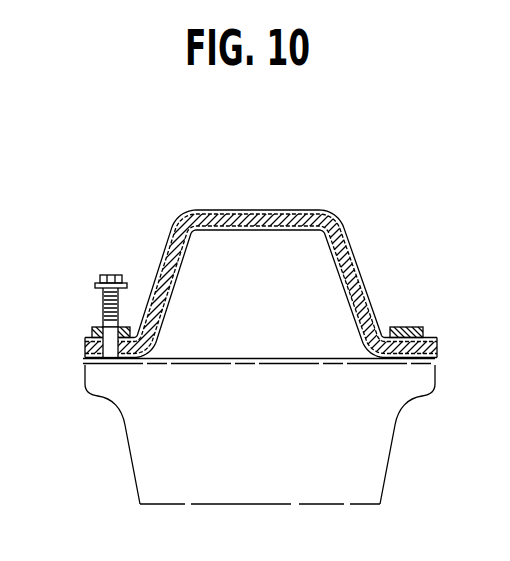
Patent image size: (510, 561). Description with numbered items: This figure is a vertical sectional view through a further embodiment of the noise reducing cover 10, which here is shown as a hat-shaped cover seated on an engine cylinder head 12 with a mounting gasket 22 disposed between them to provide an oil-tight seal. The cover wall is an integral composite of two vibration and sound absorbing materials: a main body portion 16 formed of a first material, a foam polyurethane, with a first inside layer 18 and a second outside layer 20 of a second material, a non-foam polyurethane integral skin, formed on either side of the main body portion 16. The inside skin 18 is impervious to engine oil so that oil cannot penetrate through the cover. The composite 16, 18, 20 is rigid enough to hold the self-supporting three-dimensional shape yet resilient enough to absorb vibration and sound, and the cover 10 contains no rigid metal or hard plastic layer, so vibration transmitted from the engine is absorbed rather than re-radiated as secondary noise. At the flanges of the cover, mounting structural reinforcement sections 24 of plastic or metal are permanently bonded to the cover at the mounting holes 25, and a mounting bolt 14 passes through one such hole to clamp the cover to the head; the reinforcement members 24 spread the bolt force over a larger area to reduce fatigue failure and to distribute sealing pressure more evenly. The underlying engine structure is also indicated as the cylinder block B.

The noise reducing cover 10 is at (255, 267).
The engine cylinder head 12 is at (265, 434).
The mounting bolt 14 is at (101, 276).
The main body portion 16 is at (188, 211).
The first inside layer 18 is at (172, 231).
The second outside layer 20 is at (286, 210).
The mounting gasket 22 is at (85, 364).
The mounting structural reinforcement section 24 is at (94, 327).
The mounting hole 25 is at (85, 343).
The cylinder block B is at (396, 478).